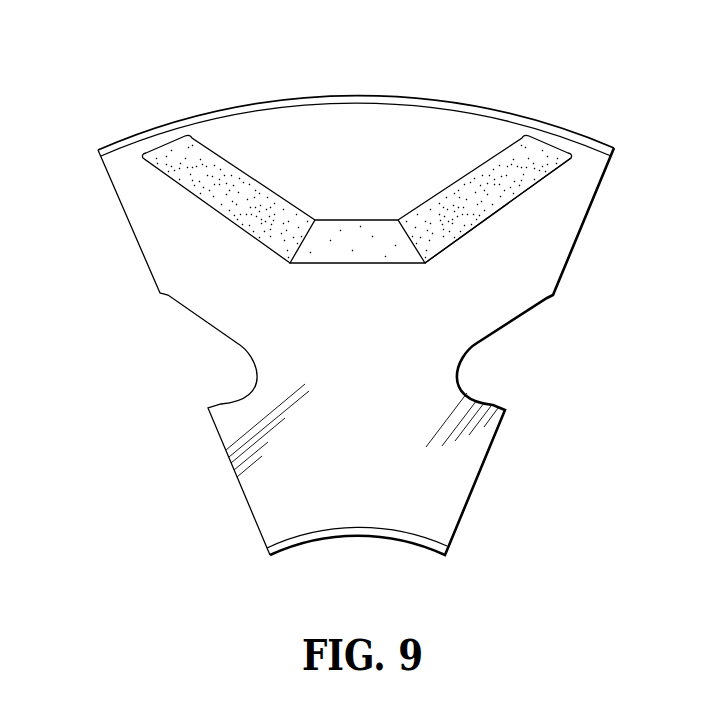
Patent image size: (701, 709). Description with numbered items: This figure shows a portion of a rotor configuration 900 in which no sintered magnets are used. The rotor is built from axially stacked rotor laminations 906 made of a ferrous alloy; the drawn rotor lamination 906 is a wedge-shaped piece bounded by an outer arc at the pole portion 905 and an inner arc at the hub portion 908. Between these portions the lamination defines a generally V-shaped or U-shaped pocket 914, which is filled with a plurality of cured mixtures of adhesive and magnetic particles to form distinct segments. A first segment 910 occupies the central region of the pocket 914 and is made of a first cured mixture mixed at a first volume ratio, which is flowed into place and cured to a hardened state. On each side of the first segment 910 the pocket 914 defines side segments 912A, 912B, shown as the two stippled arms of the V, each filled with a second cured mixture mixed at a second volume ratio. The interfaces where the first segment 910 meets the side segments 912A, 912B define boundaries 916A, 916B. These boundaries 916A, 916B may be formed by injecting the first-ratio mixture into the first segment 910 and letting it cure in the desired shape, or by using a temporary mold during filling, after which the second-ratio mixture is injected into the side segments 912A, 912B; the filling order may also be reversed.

The rotor configuration 900 is at (565, 66).
The pole portion 905 is at (371, 128).
The rotor lamination 906 is at (443, 468).
The hub portion 908 is at (362, 516).
The first segment 910 is at (354, 258).
The side segment 912A is at (536, 165).
The side segment 912B is at (204, 208).
The pocket 914 is at (483, 227).
The boundary 916A is at (432, 222).
The boundary 916B is at (283, 200).